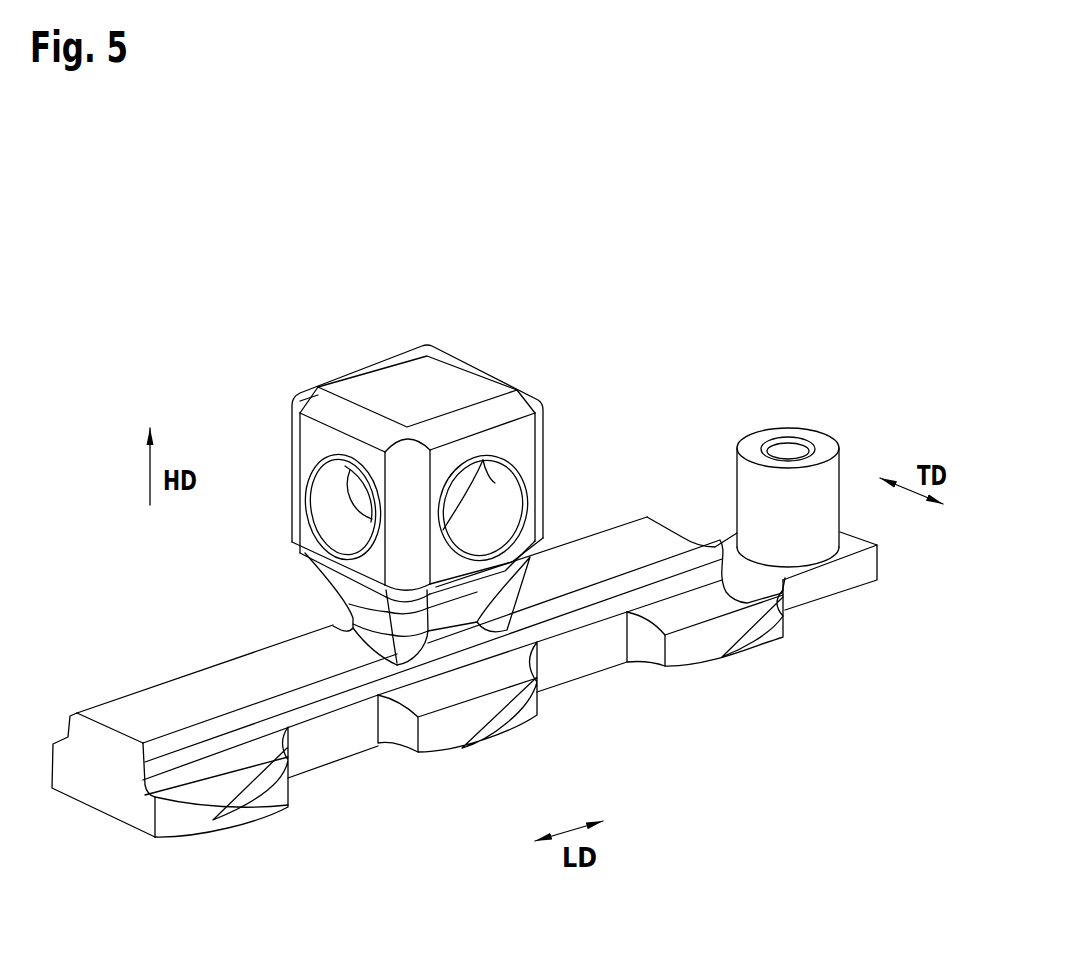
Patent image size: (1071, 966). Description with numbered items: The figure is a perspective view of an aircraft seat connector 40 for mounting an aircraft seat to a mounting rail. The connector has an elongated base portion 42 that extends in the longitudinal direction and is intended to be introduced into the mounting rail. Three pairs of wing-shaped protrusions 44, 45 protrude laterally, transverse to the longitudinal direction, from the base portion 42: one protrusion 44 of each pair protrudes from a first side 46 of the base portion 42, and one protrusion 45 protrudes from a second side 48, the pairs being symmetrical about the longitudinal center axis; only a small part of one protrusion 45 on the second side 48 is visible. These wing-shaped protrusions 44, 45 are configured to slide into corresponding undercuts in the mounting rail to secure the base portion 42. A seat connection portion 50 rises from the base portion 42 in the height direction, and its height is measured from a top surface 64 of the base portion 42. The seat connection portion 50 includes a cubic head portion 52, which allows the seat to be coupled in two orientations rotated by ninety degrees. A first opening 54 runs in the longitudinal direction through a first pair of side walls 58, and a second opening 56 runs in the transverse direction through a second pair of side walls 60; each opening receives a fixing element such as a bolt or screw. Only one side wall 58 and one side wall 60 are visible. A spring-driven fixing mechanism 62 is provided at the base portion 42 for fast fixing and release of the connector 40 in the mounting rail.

The aircraft seat connector 40 is at (740, 288).
The base portion 42 is at (335, 782).
The wing-shaped protrusion 44 is at (205, 843).
The wing-shaped protrusion 45 is at (50, 720).
The first side 46 is at (600, 653).
The second side 48 is at (240, 632).
The seat connection portion 50 is at (467, 335).
The cubic head portion 52 is at (378, 350).
The first opening 54 is at (328, 502).
The second opening 56 is at (488, 483).
The first pair of side walls 58 is at (317, 438).
The second pair of side walls 60 is at (355, 367).
The fixing mechanism 62 is at (822, 408).
The top surface 64 is at (655, 542).